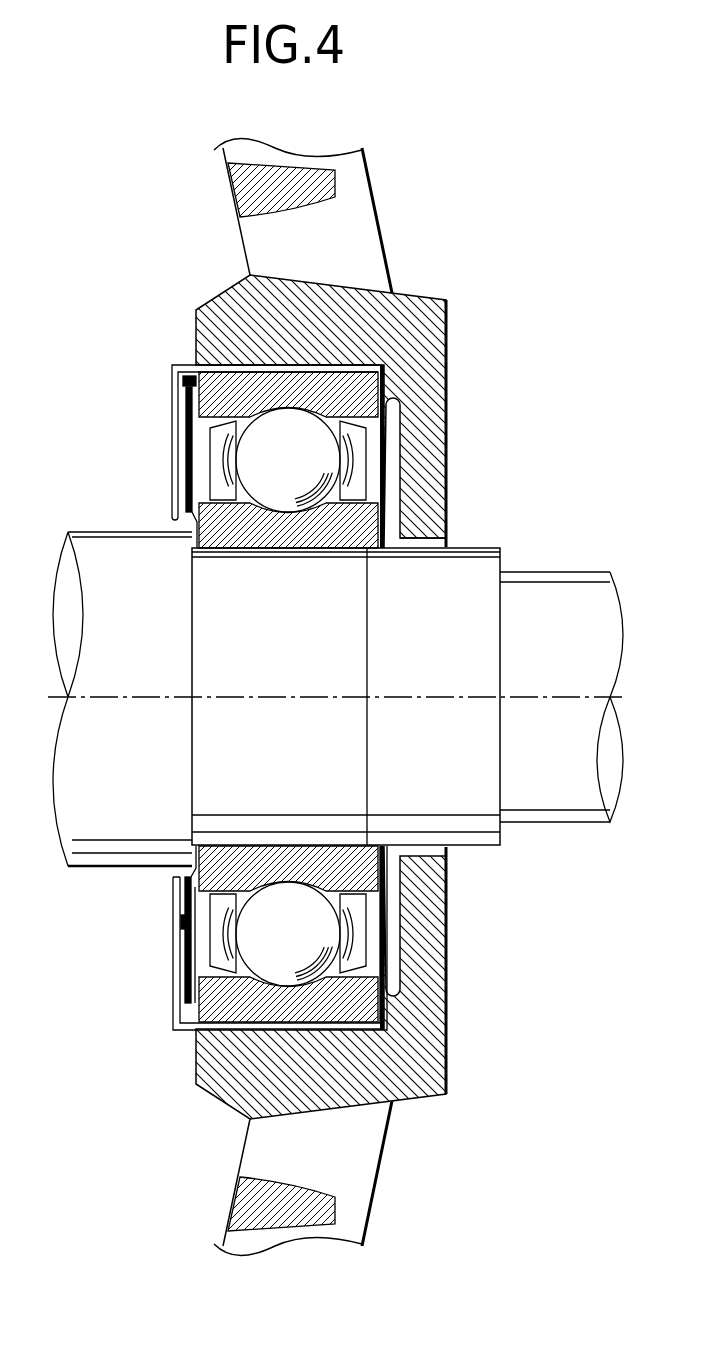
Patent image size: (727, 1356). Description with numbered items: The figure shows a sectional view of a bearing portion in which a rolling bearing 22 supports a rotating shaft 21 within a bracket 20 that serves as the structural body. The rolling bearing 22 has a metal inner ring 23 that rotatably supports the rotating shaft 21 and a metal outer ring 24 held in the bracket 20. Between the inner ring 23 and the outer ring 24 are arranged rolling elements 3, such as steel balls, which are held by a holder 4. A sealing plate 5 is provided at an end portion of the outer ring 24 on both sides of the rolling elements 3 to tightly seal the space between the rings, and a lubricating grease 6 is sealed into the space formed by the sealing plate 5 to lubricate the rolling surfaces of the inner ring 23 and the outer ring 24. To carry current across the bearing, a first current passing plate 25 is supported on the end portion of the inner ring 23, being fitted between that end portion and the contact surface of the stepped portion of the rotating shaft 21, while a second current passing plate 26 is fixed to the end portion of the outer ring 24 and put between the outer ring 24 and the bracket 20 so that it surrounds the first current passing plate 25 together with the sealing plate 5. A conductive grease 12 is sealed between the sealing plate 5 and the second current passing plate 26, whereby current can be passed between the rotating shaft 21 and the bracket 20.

The rolling element 3 is at (352, 413).
The holder 4 is at (360, 432).
The sealing plate 5 is at (370, 462).
The lubricating grease 6 is at (360, 495).
The conductive grease 12 is at (182, 380).
The bracket 20 is at (448, 314).
The rotating shaft 21 is at (577, 572).
The rolling bearing 22 is at (385, 358).
The inner ring 23 is at (383, 521).
The outer ring 24 is at (355, 379).
The first current passing plate 25 is at (189, 490).
The second current passing plate 26 is at (172, 446).